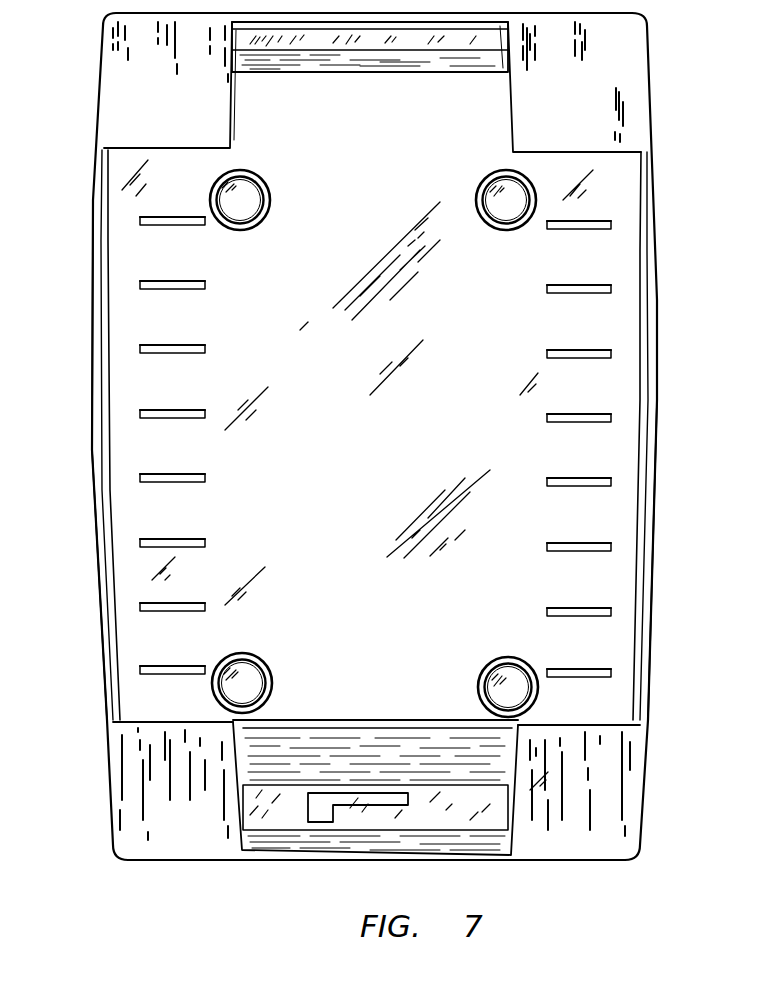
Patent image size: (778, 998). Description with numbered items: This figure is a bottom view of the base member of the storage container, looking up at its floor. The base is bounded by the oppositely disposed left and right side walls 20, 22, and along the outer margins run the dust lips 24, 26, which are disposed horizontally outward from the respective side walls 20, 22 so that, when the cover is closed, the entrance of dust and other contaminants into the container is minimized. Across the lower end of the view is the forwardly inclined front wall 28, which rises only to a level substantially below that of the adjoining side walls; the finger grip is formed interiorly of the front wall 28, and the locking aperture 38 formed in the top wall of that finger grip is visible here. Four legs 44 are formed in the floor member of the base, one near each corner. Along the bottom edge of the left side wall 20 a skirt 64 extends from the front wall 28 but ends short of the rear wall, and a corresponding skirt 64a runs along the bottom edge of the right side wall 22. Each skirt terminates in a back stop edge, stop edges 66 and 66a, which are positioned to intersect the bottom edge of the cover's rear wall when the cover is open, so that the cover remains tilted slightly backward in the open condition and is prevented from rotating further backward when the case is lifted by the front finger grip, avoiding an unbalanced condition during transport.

The left side wall 20 is at (641, 808).
The right side wall 22 is at (110, 800).
The dust lip 24 is at (650, 572).
The dust lip 26 is at (97, 545).
The front wall 28 is at (530, 860).
The locking aperture 38 is at (308, 815).
The legs 44 is at (272, 182).
The skirt 64 is at (643, 490).
The skirt 64a is at (101, 468).
The stop edge 66 is at (644, 160).
The stop edge 66a is at (103, 157).